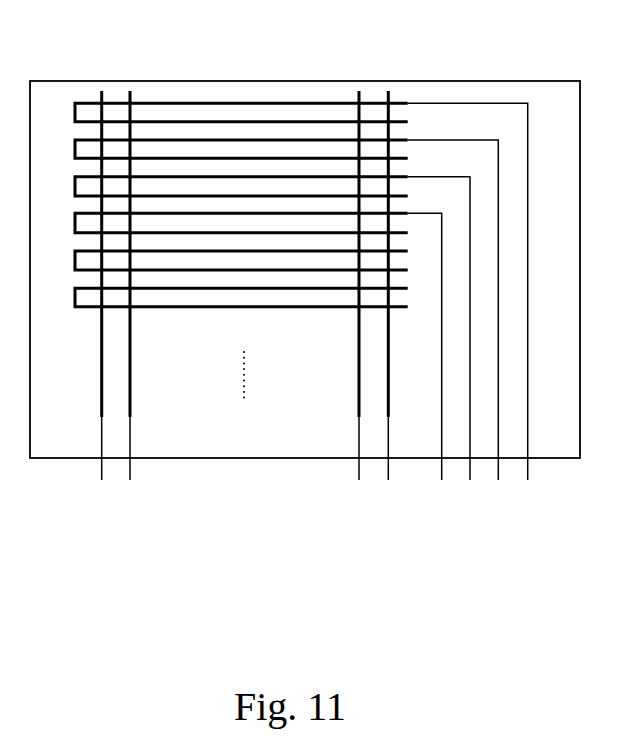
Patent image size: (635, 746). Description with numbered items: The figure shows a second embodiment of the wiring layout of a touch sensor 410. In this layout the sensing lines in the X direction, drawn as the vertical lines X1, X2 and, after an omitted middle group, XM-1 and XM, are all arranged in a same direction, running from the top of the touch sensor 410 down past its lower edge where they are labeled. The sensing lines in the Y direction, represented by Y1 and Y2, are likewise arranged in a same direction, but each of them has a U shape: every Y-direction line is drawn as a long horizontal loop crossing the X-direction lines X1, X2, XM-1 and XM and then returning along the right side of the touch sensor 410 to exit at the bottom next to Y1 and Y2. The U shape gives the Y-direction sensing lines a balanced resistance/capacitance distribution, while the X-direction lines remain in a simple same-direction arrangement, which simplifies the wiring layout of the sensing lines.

The touch sensor 410 is at (303, 81).
The sensing line in the X direction X1 is at (101, 301).
The sensing line in the X direction X2 is at (131, 301).
The sensing line in the X direction XM-1 is at (350, 301).
The sensing line in the X direction XM is at (394, 301).
The sensing line in the Y direction Y1 is at (477, 307).
The sensing line in the Y direction Y2 is at (460, 326).